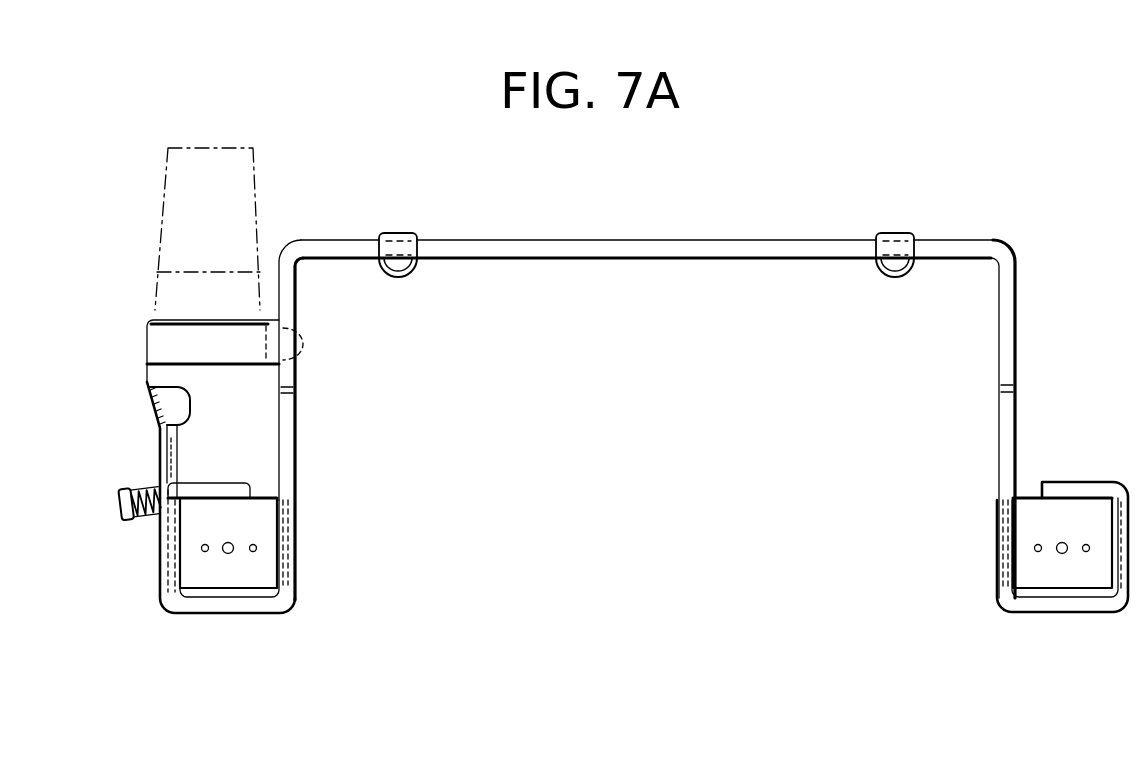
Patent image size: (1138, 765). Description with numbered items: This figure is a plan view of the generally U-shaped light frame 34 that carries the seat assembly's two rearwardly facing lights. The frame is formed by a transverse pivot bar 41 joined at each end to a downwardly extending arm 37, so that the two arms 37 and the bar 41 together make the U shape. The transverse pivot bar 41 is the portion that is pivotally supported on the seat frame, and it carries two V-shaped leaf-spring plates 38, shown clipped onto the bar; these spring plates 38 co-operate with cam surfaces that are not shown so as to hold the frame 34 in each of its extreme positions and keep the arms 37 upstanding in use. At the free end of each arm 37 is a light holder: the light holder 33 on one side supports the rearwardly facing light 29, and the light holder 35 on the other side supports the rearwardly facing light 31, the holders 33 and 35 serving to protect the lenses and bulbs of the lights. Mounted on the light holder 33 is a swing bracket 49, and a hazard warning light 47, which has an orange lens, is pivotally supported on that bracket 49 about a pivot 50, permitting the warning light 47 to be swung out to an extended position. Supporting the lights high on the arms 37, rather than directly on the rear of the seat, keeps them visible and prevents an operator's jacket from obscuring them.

The rearwardly facing light 29 is at (265, 530).
The rearwardly facing light 31 is at (1043, 517).
The light holder 33 is at (252, 613).
The light frame 34 is at (700, 224).
The light holder 35 is at (1075, 613).
The arm 37 is at (290, 448).
The V-shaped leaf-spring plate 38 is at (398, 233).
The transverse pivot bar 41 is at (601, 245).
The hazard warning light 47 is at (243, 158).
The swing bracket 49 is at (150, 407).
The pivot 50 is at (122, 513).